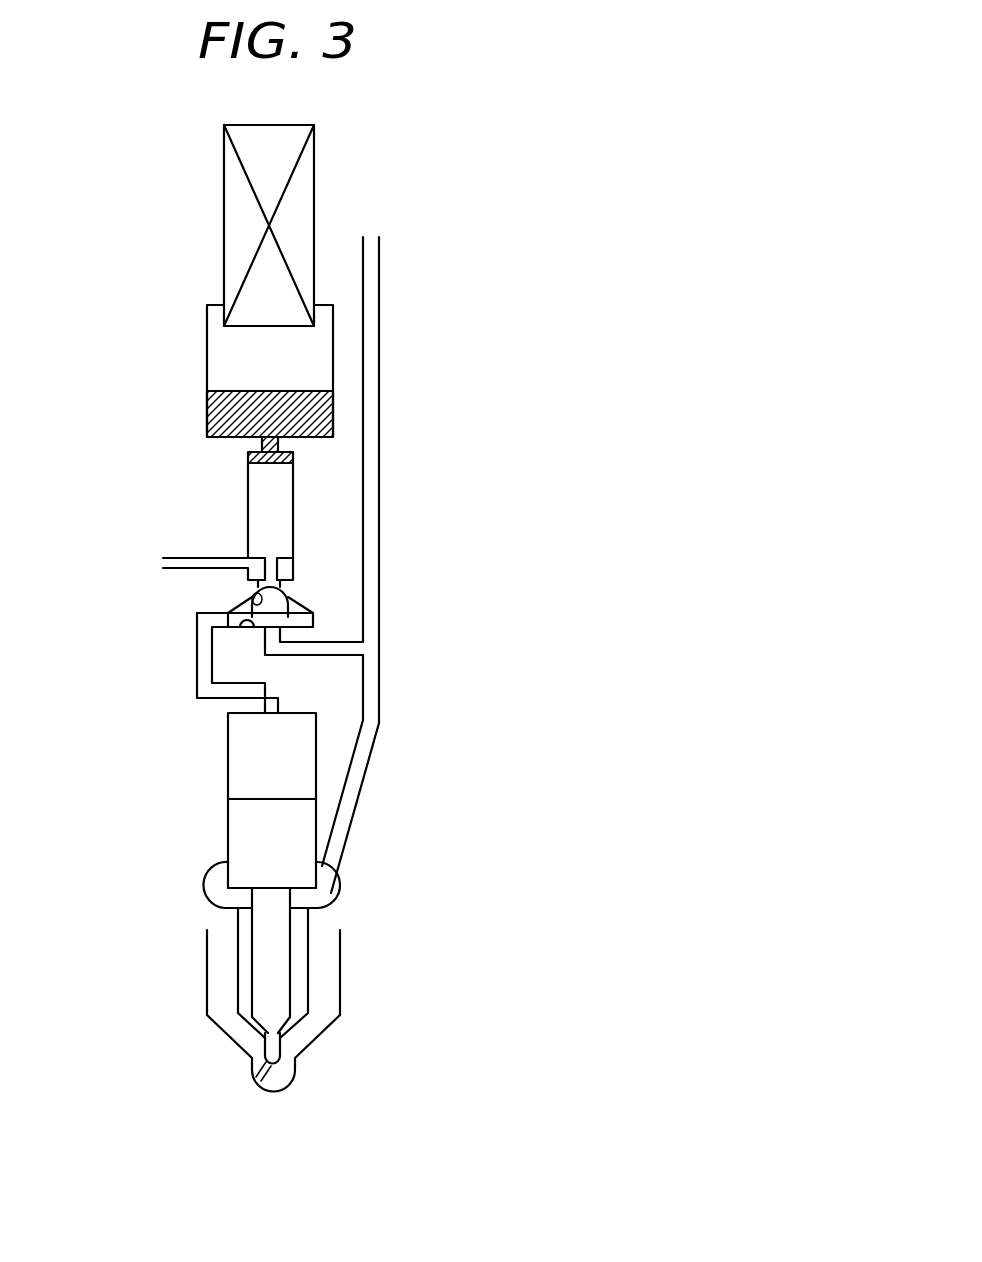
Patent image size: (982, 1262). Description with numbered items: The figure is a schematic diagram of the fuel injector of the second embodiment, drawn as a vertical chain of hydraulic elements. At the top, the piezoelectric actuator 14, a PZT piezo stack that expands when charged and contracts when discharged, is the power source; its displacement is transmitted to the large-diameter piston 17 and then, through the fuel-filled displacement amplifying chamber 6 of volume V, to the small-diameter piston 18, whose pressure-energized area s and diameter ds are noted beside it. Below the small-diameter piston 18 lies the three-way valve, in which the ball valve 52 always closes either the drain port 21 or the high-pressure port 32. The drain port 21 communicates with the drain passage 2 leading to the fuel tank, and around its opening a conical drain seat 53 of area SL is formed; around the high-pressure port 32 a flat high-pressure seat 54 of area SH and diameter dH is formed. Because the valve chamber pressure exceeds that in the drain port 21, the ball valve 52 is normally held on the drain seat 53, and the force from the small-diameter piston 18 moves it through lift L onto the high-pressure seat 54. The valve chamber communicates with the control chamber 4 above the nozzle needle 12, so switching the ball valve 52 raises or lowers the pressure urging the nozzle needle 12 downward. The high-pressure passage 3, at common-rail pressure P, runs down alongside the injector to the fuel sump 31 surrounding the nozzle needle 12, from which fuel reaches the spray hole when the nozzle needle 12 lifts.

The piezoelectric actuator 14 is at (228, 188).
The large-diameter piston 17 is at (207, 355).
The displacement amplifying chamber 6 is at (323, 420).
The small-diameter piston 18 is at (278, 535).
The drain passage 2 is at (188, 562).
The drain port 21 is at (253, 592).
The drain seat 53 is at (247, 597).
The high-pressure seat 54 is at (257, 622).
The ball valve 52 is at (280, 607).
The high-pressure port 32 is at (270, 628).
The control chamber 4 is at (235, 746).
The nozzle needle 12 is at (242, 823).
The high-pressure passage 3 is at (358, 815).
The fuel sump 31 is at (333, 898).